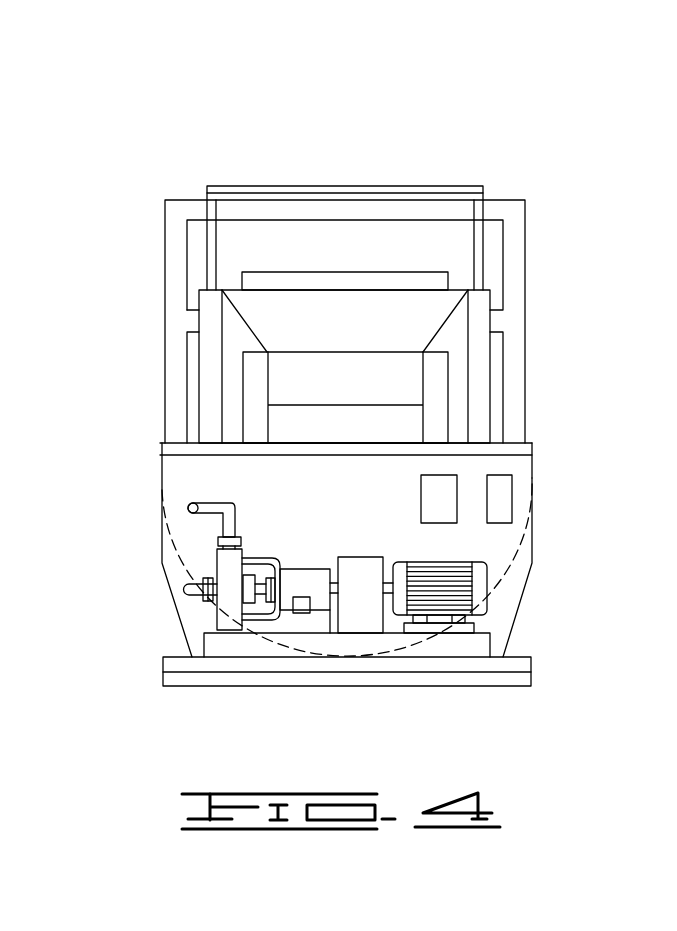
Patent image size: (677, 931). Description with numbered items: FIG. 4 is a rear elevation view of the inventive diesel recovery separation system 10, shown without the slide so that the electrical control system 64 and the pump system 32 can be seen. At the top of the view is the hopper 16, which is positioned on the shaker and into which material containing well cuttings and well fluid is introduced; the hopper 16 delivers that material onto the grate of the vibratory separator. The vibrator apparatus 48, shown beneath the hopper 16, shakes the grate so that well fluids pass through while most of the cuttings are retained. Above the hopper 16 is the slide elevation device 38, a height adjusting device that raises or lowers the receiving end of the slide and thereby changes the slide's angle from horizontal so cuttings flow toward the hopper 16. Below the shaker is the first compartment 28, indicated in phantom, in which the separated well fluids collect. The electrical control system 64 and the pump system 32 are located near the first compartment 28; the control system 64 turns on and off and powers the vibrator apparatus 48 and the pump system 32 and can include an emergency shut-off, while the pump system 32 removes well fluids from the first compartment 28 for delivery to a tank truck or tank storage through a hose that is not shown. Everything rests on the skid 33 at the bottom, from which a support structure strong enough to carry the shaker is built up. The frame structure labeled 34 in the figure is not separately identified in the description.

The separation system 10 is at (522, 111).
The hopper 16 is at (425, 323).
The first compartment 28 is at (177, 547).
The pump system 32 is at (473, 602).
The skid 33 is at (532, 670).
The frame 34 is at (165, 377).
The slide elevation device 38 is at (258, 185).
The vibrator apparatus 48 is at (253, 282).
The electrical control system 64 is at (448, 500).